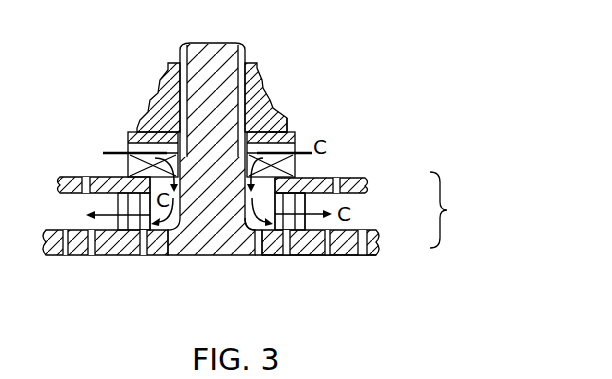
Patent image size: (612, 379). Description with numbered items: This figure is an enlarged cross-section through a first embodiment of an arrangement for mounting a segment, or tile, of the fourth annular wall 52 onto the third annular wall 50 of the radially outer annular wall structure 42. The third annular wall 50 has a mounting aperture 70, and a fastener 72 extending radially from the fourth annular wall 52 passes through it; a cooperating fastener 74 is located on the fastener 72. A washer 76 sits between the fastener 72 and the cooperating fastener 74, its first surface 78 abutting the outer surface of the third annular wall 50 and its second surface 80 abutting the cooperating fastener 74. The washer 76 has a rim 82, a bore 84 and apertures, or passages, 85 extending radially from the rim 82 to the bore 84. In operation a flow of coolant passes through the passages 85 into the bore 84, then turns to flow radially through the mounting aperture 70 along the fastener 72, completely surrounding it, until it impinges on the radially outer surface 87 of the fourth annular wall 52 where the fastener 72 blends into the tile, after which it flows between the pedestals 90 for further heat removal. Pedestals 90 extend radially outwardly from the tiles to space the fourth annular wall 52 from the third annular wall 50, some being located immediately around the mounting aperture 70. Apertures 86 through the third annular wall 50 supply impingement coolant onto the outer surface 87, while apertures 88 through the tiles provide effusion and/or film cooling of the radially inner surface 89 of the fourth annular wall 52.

The mounting aperture 70 is at (249, 257).
The fastener 72 is at (231, 47).
The cooperating fastener 74 is at (270, 103).
The second surface 80 is at (287, 117).
The washer 76 is at (296, 143).
The rim 82 is at (122, 133).
The bore 84 is at (305, 194).
The aperture or passage 85 is at (106, 153).
The aperture 86 is at (76, 178).
The third annular wall 50 is at (300, 197).
The radially outer surface 87 is at (350, 227).
The aperture 88 is at (92, 257).
The radially inner surface 89 is at (183, 257).
The fourth annular wall 52 is at (377, 257).
The first surface 78 is at (292, 258).
The pedestal 90 is at (303, 206).
The radially outer annular wall structure 42 is at (447, 212).